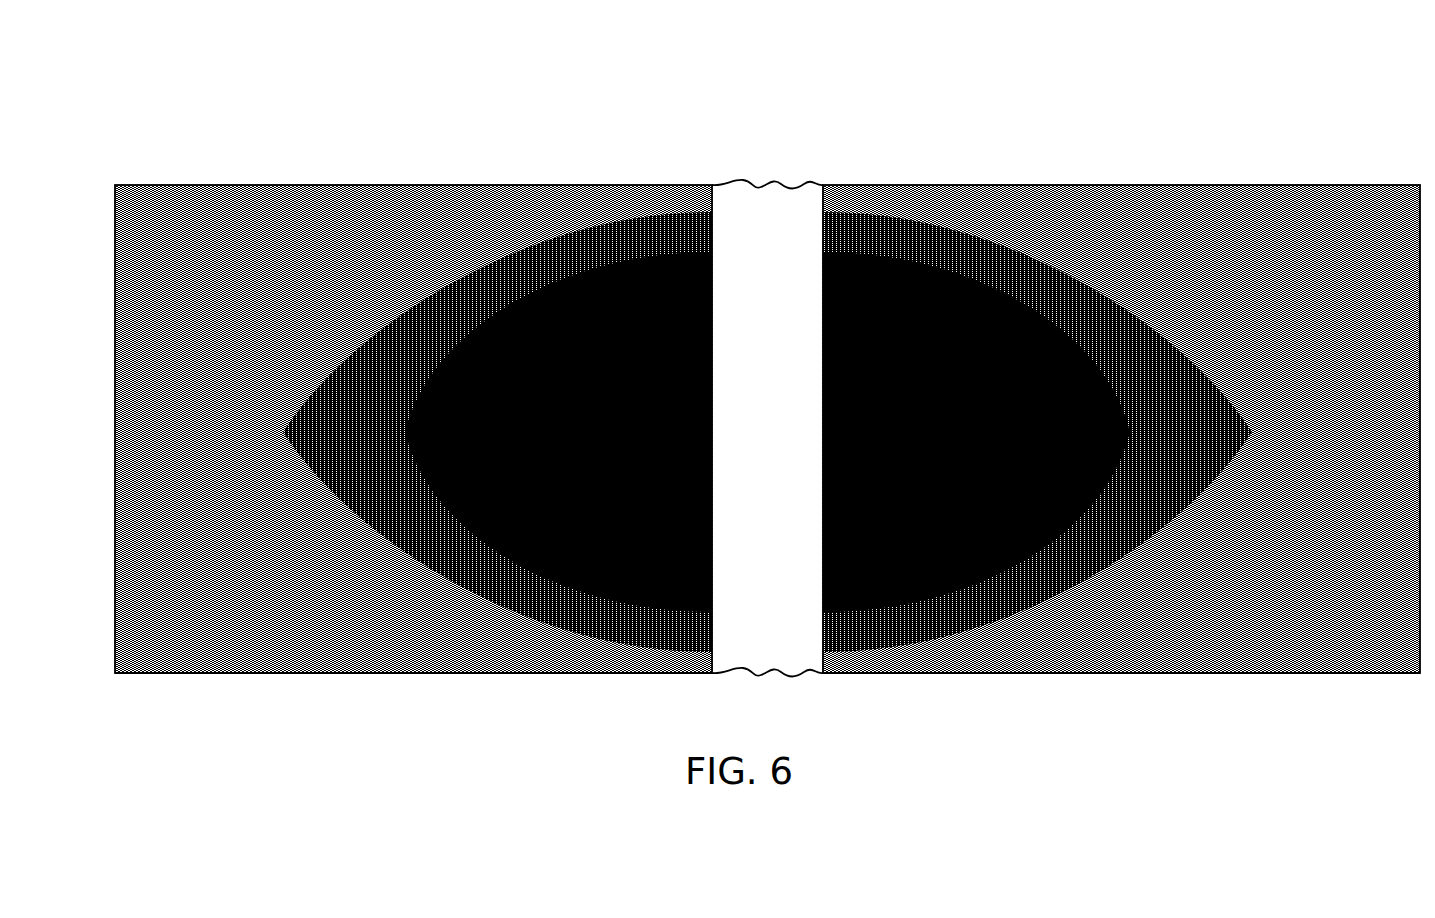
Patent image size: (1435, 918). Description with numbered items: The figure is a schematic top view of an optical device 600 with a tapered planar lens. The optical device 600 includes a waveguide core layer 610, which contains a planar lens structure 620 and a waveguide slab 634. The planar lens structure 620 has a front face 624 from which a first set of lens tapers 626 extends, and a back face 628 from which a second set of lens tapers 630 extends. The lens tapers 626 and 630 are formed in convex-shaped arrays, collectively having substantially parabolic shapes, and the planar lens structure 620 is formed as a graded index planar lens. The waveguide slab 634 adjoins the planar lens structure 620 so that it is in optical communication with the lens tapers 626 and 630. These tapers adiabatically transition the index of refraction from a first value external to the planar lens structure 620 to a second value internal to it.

The optical device 600 is at (1002, 45).
The waveguide core layer 610 is at (443, 183).
The planar lens structure 620 is at (1058, 316).
The front face 624 is at (1125, 460).
The first set of lens tapers 626 is at (975, 262).
The back face 628 is at (357, 440).
The second set of lens tapers 630 is at (558, 258).
The waveguide slab 634 is at (300, 608).